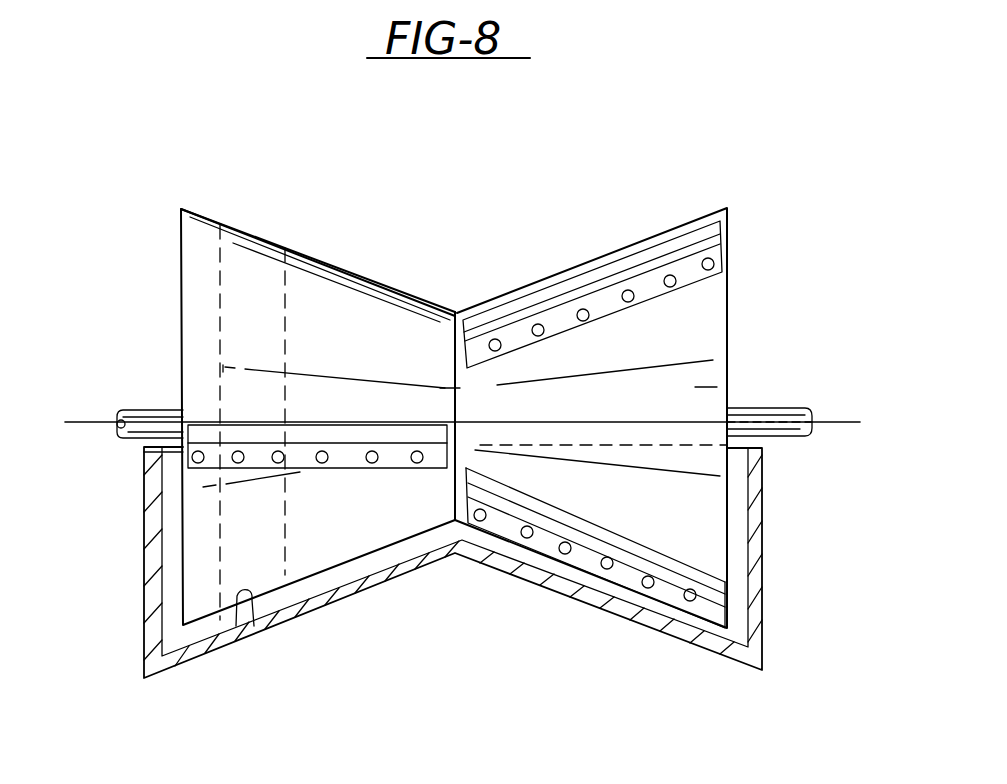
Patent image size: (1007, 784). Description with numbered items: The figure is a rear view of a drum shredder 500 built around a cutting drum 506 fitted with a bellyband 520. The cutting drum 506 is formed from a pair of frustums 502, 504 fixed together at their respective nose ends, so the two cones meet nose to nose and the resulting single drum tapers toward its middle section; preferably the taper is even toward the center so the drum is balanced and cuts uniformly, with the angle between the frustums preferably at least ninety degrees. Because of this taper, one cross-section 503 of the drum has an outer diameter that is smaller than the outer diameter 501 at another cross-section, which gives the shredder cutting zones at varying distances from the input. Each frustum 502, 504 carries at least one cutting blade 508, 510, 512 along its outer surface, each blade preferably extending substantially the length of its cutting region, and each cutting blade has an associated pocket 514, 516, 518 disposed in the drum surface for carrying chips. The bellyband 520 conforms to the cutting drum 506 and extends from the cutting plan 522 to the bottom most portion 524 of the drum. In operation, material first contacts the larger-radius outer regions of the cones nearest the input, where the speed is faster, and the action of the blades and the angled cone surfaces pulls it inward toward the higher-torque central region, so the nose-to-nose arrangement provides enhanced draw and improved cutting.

The drum shredder 500 is at (307, 201).
The outer diameter 501 is at (220, 217).
The cross-section 503 is at (285, 243).
The cutting drum 506 is at (455, 317).
The frustum 504 is at (697, 387).
The pocket 514 is at (340, 420).
The cutting blade 508 is at (318, 466).
The pocket 516 is at (583, 263).
The cutting blade 510 is at (603, 317).
The pocket 518 is at (620, 540).
The cutting blade 512 is at (647, 587).
The frustum 502 is at (203, 535).
The bellyband 520 is at (512, 577).
The cutting plan 522 is at (145, 452).
The bottom most portion 524 is at (238, 595).